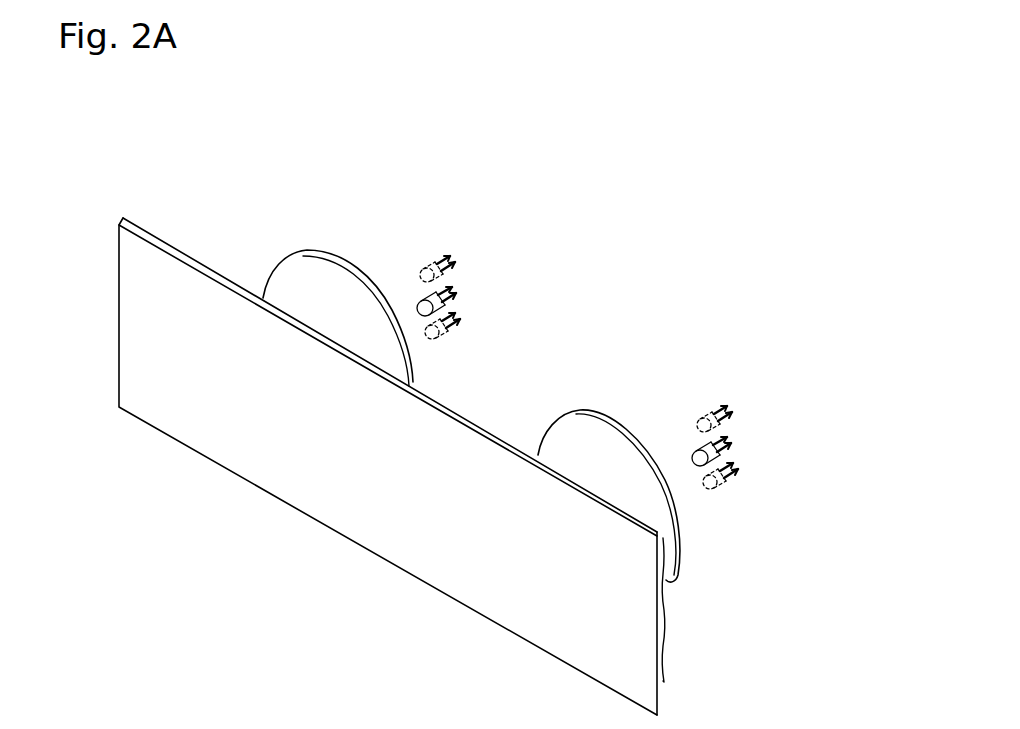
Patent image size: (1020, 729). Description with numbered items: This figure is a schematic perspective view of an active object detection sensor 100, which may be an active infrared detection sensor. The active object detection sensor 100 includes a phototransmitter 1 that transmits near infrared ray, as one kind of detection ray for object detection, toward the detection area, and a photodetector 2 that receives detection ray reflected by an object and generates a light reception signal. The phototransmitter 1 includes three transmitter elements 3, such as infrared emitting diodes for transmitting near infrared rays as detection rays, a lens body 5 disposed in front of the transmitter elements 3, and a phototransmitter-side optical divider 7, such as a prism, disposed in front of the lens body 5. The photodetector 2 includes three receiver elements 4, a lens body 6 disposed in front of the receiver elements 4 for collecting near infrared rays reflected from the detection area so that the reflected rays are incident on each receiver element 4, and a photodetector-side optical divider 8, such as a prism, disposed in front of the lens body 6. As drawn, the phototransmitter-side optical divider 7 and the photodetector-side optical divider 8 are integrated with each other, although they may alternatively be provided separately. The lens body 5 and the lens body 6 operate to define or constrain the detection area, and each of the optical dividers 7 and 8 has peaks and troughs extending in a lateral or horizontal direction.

The active object detection sensor 100 is at (597, 292).
The phototransmitter 1 is at (365, 210).
The photodetector 2 is at (738, 528).
The transmitter elements 3 is at (442, 253).
The receiver elements 4 is at (720, 403).
The lens body 5 is at (282, 297).
The lens body 6 is at (668, 527).
The phototransmitter-side optical divider 7 is at (275, 447).
The photodetector-side optical divider 8 is at (523, 583).